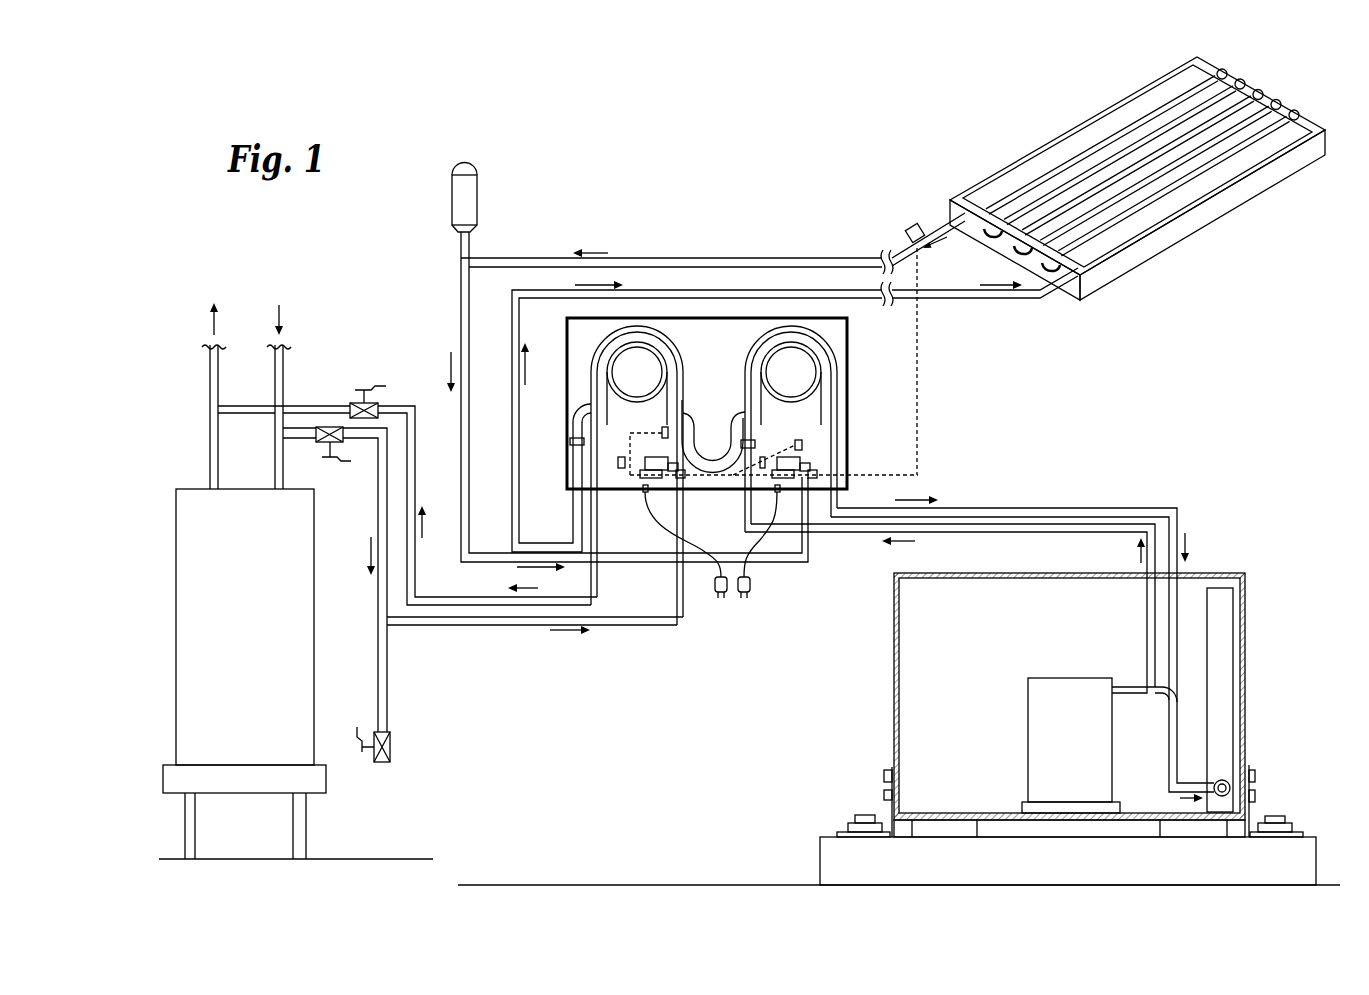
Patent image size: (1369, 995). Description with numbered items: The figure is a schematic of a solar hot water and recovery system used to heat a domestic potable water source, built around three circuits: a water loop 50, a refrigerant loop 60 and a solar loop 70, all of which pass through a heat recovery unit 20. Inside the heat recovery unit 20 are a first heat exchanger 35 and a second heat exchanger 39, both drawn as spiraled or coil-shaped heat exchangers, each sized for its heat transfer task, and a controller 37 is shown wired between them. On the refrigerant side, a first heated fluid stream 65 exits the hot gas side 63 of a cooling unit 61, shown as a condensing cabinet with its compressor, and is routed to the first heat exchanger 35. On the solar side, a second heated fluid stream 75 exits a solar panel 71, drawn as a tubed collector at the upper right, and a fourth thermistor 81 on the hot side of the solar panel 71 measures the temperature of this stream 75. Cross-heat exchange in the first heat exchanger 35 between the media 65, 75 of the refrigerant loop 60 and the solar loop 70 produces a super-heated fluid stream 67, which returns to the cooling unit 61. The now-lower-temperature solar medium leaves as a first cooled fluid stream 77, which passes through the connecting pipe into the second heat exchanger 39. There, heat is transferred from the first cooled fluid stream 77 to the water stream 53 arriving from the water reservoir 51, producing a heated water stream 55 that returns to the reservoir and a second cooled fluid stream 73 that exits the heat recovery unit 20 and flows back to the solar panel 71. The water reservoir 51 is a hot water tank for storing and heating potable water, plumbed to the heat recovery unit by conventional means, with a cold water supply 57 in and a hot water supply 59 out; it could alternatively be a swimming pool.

The heat recovery unit 20 is at (851, 339).
The first heat exchanger 35 is at (791, 326).
The controller 37 is at (648, 460).
The second heat exchanger 39 is at (638, 327).
The water loop 50 is at (458, 668).
The water reservoir 51 is at (292, 638).
The water stream 53 is at (538, 627).
The heated water stream 55 is at (322, 405).
The cold water supply 57 is at (275, 377).
The hot water supply 59 is at (210, 372).
The refrigerant loop 60 is at (998, 500).
The cooling unit 61 is at (892, 656).
The hot gas side 63 is at (1125, 696).
The first heated fluid stream 65 is at (882, 535).
The super-heated fluid stream 67 is at (940, 503).
The solar loop 70 is at (707, 243).
The solar panel 71 is at (1190, 228).
The second cooled fluid stream 73 is at (513, 470).
The second heated fluid stream 75 is at (557, 258).
The first cooled fluid stream 77 is at (712, 462).
The fourth thermistor 81 is at (915, 225).